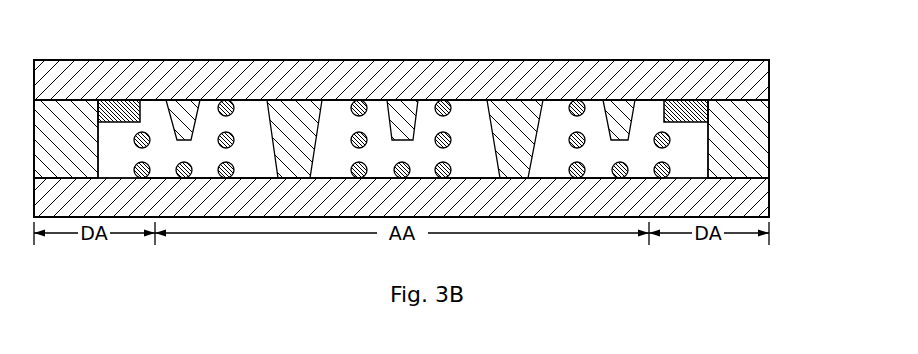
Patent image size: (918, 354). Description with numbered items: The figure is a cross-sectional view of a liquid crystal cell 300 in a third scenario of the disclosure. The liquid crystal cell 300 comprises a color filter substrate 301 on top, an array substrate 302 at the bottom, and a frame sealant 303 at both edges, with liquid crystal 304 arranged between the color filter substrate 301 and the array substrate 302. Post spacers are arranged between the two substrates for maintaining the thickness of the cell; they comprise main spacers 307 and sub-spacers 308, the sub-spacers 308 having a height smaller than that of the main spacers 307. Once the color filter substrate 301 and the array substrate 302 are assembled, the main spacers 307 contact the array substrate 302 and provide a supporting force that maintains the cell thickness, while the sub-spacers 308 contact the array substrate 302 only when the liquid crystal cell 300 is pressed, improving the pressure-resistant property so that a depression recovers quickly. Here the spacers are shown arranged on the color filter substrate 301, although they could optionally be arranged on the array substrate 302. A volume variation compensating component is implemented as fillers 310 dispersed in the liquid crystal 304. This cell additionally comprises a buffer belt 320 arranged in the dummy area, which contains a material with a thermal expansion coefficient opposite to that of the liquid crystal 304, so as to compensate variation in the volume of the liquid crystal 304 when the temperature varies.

The liquid crystal cell 300 is at (78, 44).
The color filter substrate 301 is at (769, 80).
The array substrate 302 is at (769, 196).
The frame sealant 303 is at (769, 138).
The liquid crystal 304 is at (338, 118).
The main spacer 307 is at (512, 118).
The sub-spacer 308 is at (624, 110).
The fillers 310 is at (663, 130).
The buffer belt 320 is at (118, 112).